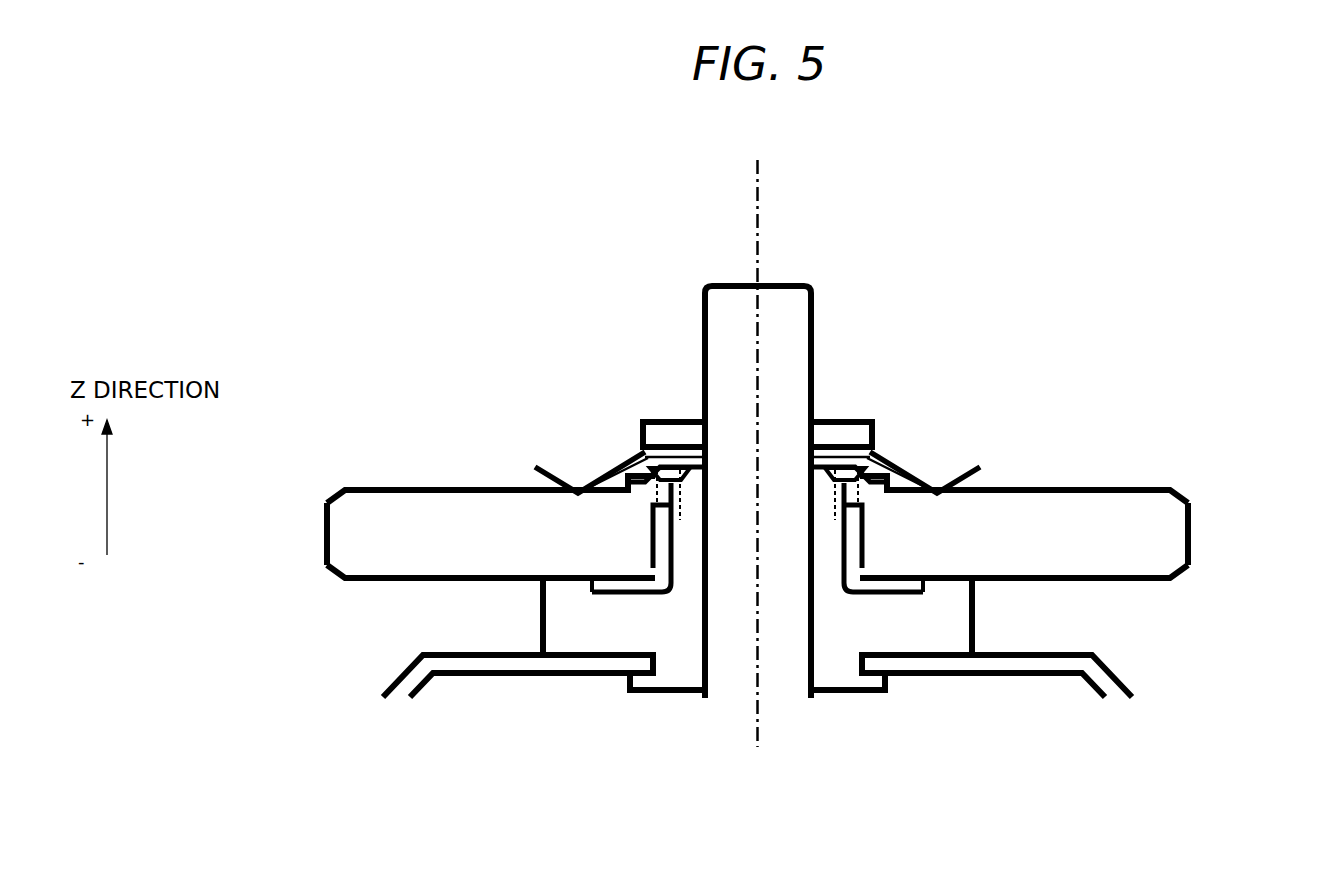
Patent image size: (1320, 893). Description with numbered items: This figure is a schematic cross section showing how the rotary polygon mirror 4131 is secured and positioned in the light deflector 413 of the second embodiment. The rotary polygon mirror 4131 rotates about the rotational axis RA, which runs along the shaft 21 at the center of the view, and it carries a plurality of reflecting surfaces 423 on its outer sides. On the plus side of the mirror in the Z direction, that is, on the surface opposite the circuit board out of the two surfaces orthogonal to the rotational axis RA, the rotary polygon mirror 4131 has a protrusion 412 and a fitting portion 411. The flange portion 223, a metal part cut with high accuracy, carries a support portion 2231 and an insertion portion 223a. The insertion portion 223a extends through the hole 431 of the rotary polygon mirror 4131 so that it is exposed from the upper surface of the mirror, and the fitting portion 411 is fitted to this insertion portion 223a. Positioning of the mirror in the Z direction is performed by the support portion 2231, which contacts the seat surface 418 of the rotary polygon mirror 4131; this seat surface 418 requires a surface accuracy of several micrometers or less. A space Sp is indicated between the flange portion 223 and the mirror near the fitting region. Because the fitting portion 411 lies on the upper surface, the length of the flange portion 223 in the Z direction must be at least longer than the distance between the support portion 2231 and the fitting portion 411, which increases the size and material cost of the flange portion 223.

The shaft 21 is at (740, 284).
The rotational axis RA is at (757, 170).
The light deflector 413 is at (882, 178).
The rotary polygon mirror 4131 is at (443, 508).
The hole 431 is at (680, 482).
The fitting portion 411 is at (835, 487).
The protrusion 412 is at (600, 487).
The reflecting surfaces 423 is at (745, 466).
The support portion 2231 is at (590, 578).
The seat surface 418 is at (543, 583).
The flange portion 223 is at (912, 622).
The insertion portion 223a is at (695, 548).
The space Sp is at (660, 535).